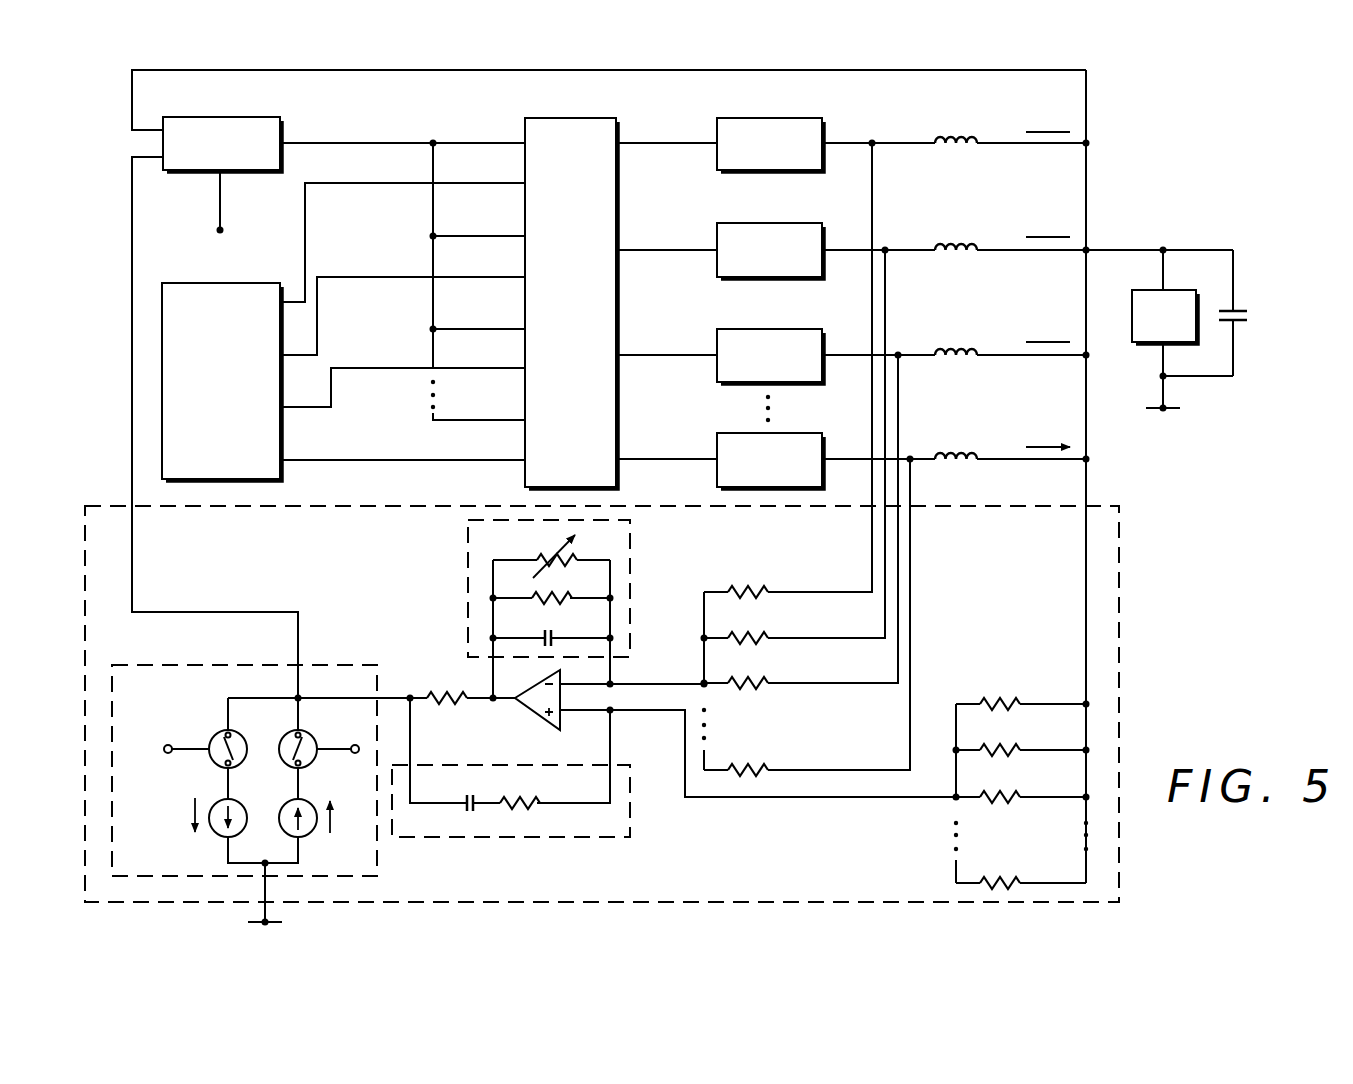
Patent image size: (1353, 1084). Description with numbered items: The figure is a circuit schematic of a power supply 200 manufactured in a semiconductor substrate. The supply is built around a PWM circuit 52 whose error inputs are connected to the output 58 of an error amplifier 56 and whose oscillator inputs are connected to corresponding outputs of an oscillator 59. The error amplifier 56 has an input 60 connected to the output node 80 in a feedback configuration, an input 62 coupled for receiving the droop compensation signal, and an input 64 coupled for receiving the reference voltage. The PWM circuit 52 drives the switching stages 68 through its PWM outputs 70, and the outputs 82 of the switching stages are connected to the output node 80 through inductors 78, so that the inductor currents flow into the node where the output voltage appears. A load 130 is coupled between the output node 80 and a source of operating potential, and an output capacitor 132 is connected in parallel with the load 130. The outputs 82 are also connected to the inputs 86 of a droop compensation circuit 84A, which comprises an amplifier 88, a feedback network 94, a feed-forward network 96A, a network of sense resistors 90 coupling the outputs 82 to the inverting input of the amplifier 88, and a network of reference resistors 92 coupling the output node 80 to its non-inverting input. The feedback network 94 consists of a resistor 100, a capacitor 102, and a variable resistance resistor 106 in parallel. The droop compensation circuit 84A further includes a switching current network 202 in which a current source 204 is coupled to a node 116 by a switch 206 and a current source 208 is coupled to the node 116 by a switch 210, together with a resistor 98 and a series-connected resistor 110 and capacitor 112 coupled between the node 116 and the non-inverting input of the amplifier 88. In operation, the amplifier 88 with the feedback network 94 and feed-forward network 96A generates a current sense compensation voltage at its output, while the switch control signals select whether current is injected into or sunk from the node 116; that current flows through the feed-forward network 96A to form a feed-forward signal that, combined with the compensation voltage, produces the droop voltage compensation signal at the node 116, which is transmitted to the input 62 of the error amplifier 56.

The PWM circuit 52 is at (582, 118).
The error amplifier 56 is at (250, 117).
The output 58 is at (398, 143).
The oscillator 59 is at (200, 283).
The input 60 is at (134, 103).
The input 62 is at (134, 203).
The input 64 is at (225, 229).
The switching stages 68 is at (747, 433).
The PWM outputs 70 is at (674, 456).
The inductors 78 is at (961, 130).
The output node 80 is at (1086, 250).
The outputs 82 is at (840, 457).
The droop compensation circuit 84A is at (1120, 659).
The inputs 86 is at (816, 590).
The amplifier 88 is at (545, 727).
The sense resistors 90 is at (753, 586).
The reference resistors 92 is at (1004, 693).
The feedback network 94 is at (573, 609).
The feed-forward network 96A is at (533, 767).
The resistor 98 is at (456, 708).
The resistor 100 is at (558, 590).
The capacitor 102 is at (548, 632).
The variable resistance resistor 106 is at (553, 550).
The resistor 110 is at (522, 797).
The capacitor 112 is at (470, 797).
The node 116 is at (410, 701).
The load 130 is at (1140, 343).
The output capacitor 132 is at (1242, 307).
The power supply 200 is at (1260, 738).
The switching current network 202 is at (244, 781).
The current source 204 is at (292, 797).
The switch 206 is at (285, 727).
The current source 208 is at (217, 797).
The switch 210 is at (217, 727).